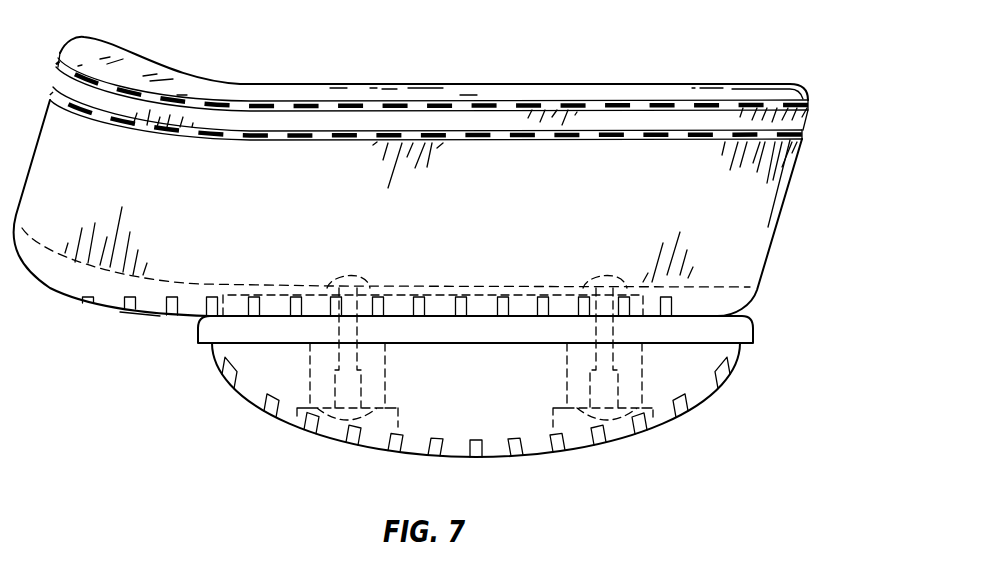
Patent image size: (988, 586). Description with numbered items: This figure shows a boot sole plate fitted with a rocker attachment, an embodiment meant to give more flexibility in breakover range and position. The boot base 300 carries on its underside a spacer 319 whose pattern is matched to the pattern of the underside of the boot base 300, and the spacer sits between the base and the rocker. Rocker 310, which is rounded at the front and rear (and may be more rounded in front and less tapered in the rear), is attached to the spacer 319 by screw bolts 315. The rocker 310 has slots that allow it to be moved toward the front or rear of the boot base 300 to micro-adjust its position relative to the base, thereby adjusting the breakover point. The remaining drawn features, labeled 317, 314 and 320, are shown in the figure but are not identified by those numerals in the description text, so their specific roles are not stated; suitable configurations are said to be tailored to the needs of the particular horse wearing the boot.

The boot base 300 is at (802, 198).
The housing body 317 is at (798, 267).
The spacer 319 is at (755, 329).
The rocker 310 is at (704, 387).
The tabs 314 is at (346, 272).
The screw bolts 315 is at (157, 318).
The internal structure 320 is at (335, 382).